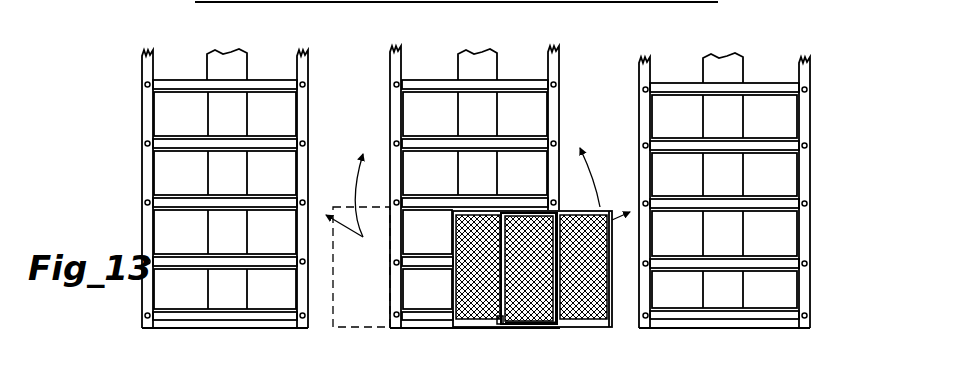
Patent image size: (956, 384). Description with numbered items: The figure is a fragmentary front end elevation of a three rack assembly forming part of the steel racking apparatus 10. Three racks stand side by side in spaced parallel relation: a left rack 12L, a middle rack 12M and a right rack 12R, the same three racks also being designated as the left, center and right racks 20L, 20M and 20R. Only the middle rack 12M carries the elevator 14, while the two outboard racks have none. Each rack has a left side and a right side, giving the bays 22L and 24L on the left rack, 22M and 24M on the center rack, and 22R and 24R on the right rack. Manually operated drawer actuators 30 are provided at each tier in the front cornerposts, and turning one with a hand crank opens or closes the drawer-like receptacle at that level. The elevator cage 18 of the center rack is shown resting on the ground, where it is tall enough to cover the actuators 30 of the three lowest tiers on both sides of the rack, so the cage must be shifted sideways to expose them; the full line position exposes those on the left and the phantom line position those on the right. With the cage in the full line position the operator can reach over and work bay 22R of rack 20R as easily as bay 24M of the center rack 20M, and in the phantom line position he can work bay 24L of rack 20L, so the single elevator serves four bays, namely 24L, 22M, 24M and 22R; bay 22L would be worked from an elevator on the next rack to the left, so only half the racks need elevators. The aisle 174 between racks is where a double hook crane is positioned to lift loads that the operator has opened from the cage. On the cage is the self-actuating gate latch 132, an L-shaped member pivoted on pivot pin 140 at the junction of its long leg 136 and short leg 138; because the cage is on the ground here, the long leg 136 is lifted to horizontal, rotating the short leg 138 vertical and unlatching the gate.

The steel racking apparatus 10 is at (166, 46).
The left rack 12L is at (270, 64).
The middle rack 12M is at (482, 34).
The right rack 12R is at (741, 46).
The elevator 14 is at (516, 269).
The elevator cage 18 is at (456, 232).
The left rack 20L is at (195, 184).
The center rack 20M is at (444, 182).
The right rack 20R is at (694, 184).
The left side bay 22L is at (142, 107).
The left side bay 22M is at (390, 117).
The left side bay 22R is at (640, 155).
The right side bay 24L is at (310, 82).
The right side bay 24M is at (560, 120).
The right side bay 24R is at (810, 133).
The drawer actuator 30 is at (300, 263).
The gate latch 132 is at (521, 326).
The long leg 136 is at (512, 324).
The short leg 138 is at (494, 318).
The pivot pin 140 is at (498, 320).
The aisle 174 is at (364, 100).